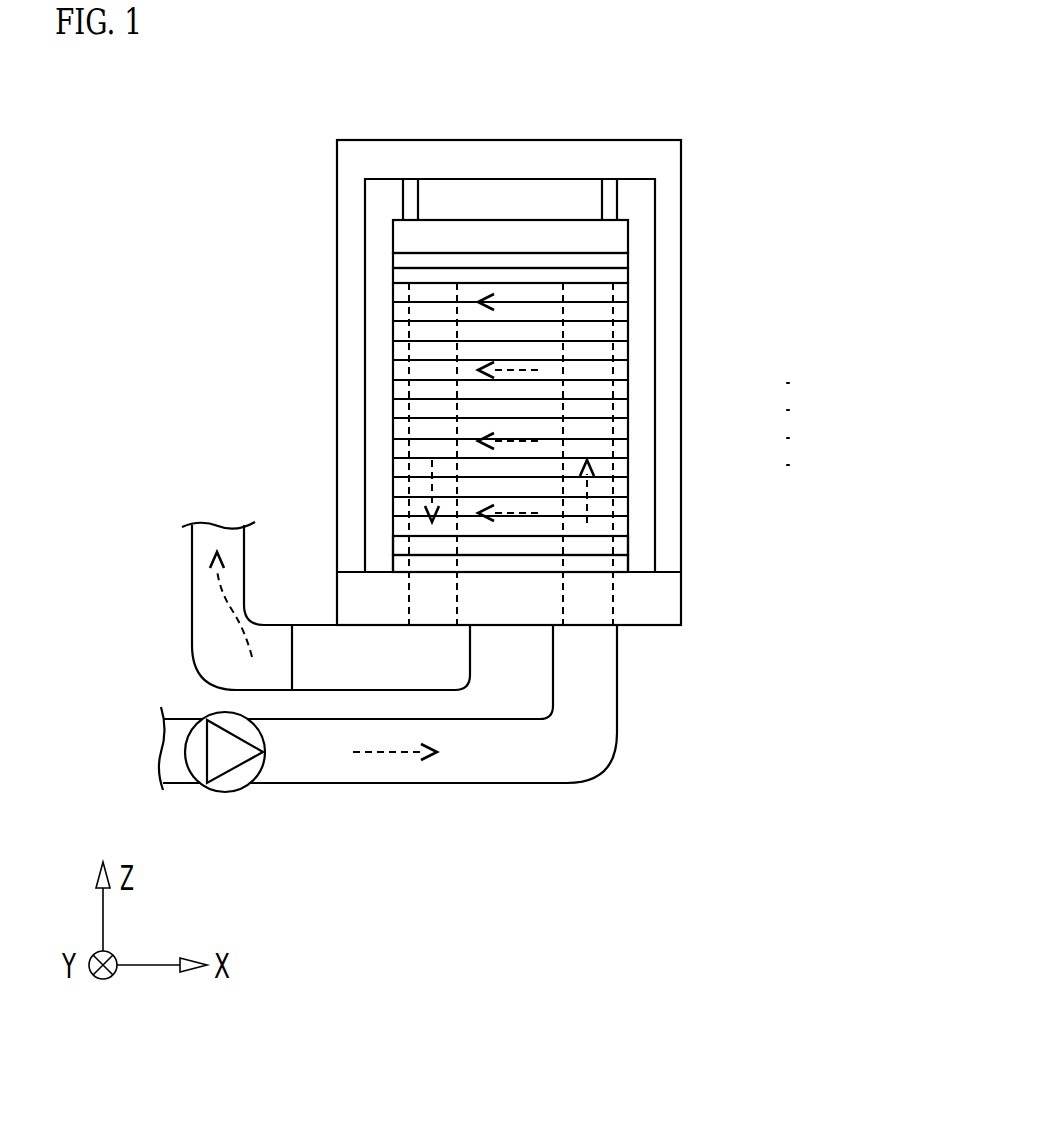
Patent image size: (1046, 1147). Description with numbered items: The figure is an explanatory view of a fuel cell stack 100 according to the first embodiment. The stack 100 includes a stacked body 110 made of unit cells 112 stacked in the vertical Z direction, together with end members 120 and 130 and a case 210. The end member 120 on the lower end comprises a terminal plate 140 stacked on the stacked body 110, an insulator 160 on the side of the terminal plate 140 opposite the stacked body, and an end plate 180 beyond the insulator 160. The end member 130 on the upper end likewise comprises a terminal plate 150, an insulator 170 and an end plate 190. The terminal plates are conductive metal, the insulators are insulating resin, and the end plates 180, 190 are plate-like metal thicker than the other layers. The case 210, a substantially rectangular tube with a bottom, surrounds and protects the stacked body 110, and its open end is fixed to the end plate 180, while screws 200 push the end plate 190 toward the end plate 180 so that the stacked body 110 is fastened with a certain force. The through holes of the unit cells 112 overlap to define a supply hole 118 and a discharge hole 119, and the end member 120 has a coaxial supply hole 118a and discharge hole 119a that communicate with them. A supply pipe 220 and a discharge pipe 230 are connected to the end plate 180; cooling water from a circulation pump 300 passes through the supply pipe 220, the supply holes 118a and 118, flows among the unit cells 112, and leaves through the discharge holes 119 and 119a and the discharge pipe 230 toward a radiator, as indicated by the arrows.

The fuel cell stack 100 is at (883, 220).
The stacked body 110 is at (817, 303).
The unit cell 112 is at (627, 300).
The supply hole 118 is at (607, 340).
The supply hole 118a is at (593, 600).
The discharge hole 119 is at (395, 343).
The discharge hole 119a is at (445, 592).
The end member 120 is at (773, 538).
The end member 130 is at (777, 212).
The terminal plate 140 is at (627, 545).
The terminal plate 150 is at (627, 275).
The insulator 160 is at (627, 560).
The insulator 170 is at (627, 257).
The end plate 180 is at (670, 606).
The end plate 190 is at (627, 230).
The screws 200 is at (617, 193).
The case 210 is at (662, 157).
The supply pipe 220 is at (618, 650).
The discharge pipe 230 is at (308, 625).
The circulation pump 300 is at (228, 790).